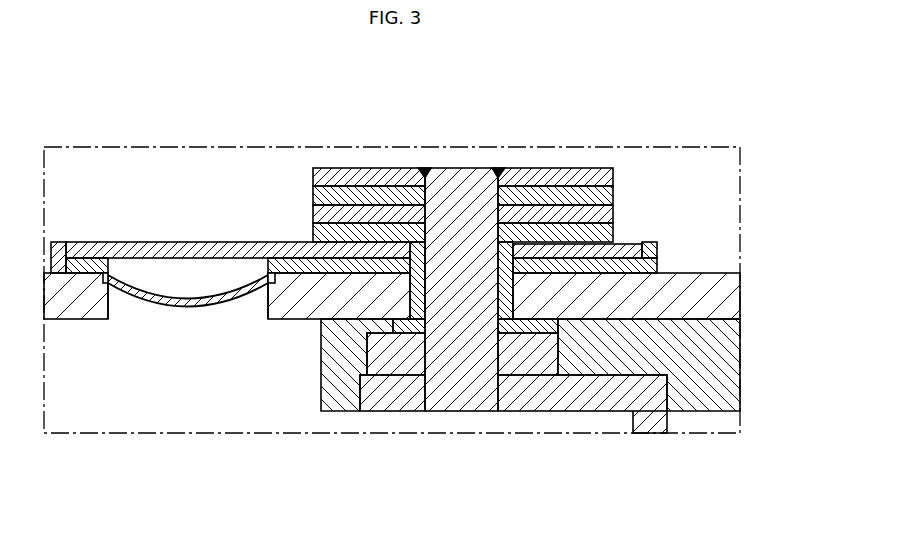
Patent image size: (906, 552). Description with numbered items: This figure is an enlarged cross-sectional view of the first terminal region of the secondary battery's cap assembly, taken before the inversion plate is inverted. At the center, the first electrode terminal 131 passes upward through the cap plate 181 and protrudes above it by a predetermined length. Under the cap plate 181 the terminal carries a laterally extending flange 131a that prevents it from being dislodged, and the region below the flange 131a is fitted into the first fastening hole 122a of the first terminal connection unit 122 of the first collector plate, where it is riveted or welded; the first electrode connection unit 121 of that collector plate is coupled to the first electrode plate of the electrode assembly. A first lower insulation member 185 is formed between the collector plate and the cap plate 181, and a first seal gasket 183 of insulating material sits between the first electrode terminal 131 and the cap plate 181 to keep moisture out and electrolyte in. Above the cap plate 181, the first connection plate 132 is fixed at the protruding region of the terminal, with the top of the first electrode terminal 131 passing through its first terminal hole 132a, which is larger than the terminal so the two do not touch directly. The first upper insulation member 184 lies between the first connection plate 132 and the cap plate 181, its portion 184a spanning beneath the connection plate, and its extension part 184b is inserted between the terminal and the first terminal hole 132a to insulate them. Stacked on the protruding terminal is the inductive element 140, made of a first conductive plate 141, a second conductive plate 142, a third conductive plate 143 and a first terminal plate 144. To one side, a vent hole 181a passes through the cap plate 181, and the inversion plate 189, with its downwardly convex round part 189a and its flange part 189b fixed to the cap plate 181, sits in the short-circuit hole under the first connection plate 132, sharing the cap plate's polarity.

The first electrode connection unit 121 is at (652, 425).
The first terminal connection unit 122 is at (594, 403).
The first fastening hole 122a is at (500, 392).
The first electrode terminal 131 is at (457, 287).
The flange 131a is at (382, 363).
The first connection plate 132 is at (183, 250).
The first terminal hole 132a is at (430, 243).
The inductive element 140 is at (417, 143).
The first conductive plate 141 is at (313, 237).
The second conductive plate 142 is at (313, 213).
The third conductive plate 143 is at (313, 195).
The first terminal plate 144 is at (345, 177).
The cap plate 181 is at (63, 303).
The vent hole 181a is at (110, 300).
The first seal gasket 183 is at (515, 292).
The first upper insulation member 184 is at (439, 179).
The left electrode plate 184a is at (145, 242).
The extension part 184b is at (500, 243).
The first lower insulation member 185 is at (720, 377).
The inversion plate 189 is at (199, 402).
The downwardly convex round part 189a is at (182, 303).
The flange part 189b is at (271, 280).